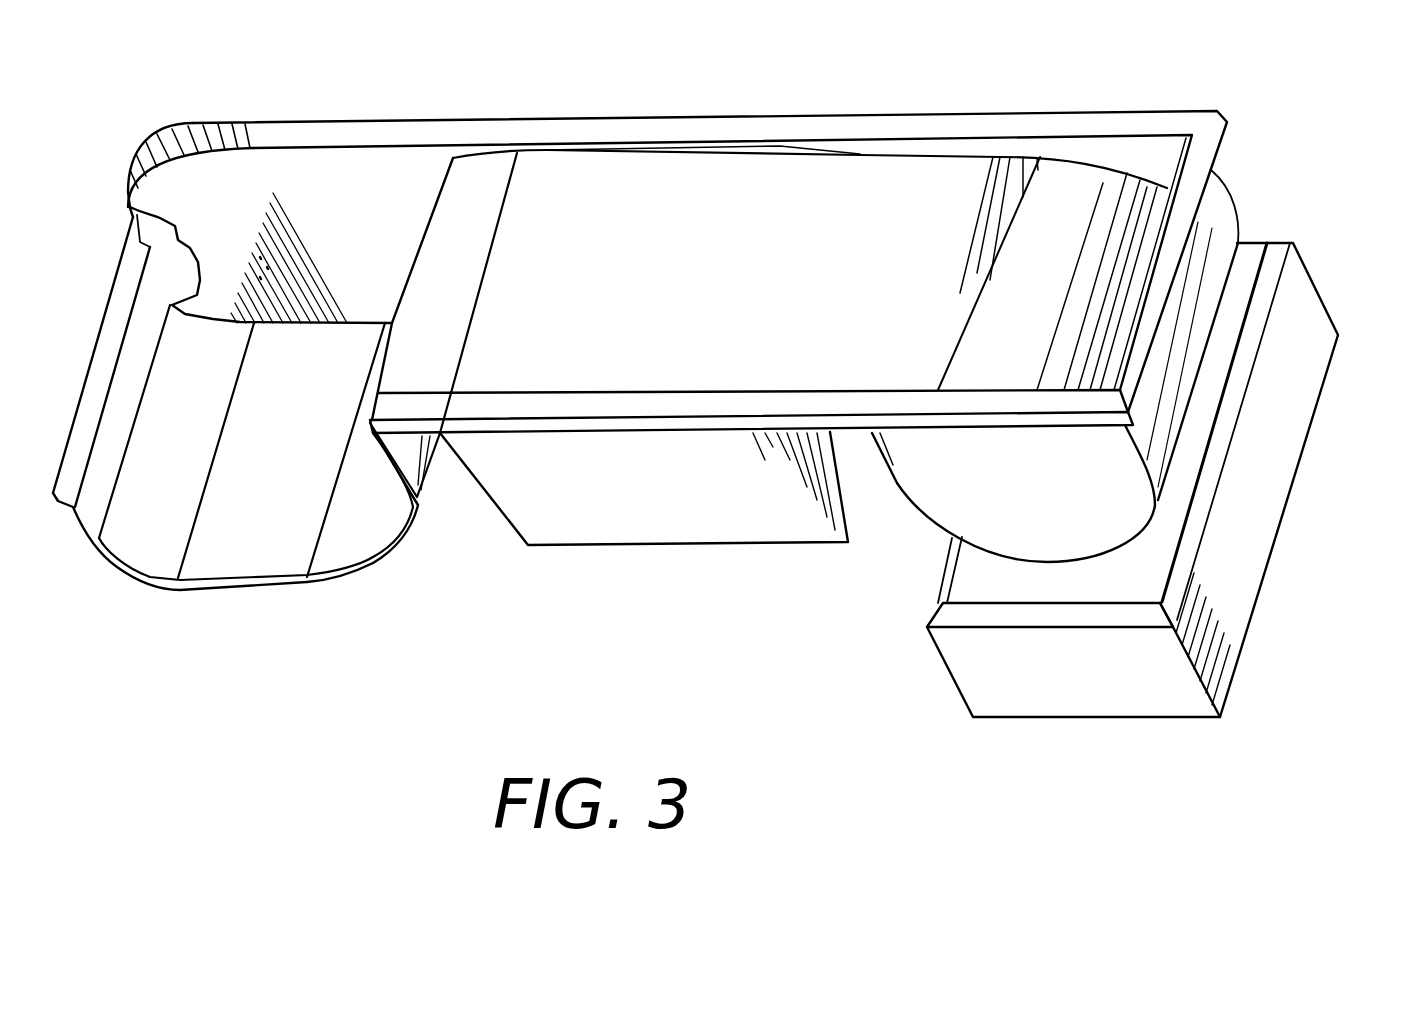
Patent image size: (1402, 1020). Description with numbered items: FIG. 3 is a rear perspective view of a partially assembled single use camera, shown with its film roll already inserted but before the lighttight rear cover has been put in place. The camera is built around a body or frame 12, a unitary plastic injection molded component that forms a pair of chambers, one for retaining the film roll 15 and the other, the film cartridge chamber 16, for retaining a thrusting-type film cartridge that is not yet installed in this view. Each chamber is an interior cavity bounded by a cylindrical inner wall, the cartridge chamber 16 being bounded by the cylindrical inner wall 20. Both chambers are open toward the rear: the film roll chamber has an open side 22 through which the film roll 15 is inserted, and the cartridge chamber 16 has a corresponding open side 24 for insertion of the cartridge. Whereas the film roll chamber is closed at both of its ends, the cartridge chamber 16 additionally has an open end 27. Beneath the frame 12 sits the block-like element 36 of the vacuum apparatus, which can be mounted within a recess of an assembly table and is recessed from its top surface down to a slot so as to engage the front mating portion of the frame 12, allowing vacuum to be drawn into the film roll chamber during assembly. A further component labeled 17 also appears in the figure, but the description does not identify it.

The body or frame 12 is at (627, 510).
The film roll 15 is at (1073, 193).
The film cartridge chamber 16 is at (128, 207).
The top plate 17 is at (552, 202).
The cylindrical inner wall 20 is at (140, 557).
The open side 22 is at (1143, 162).
The open side 24 is at (260, 203).
The open end 27 is at (352, 548).
The block-like element 36 is at (1272, 468).